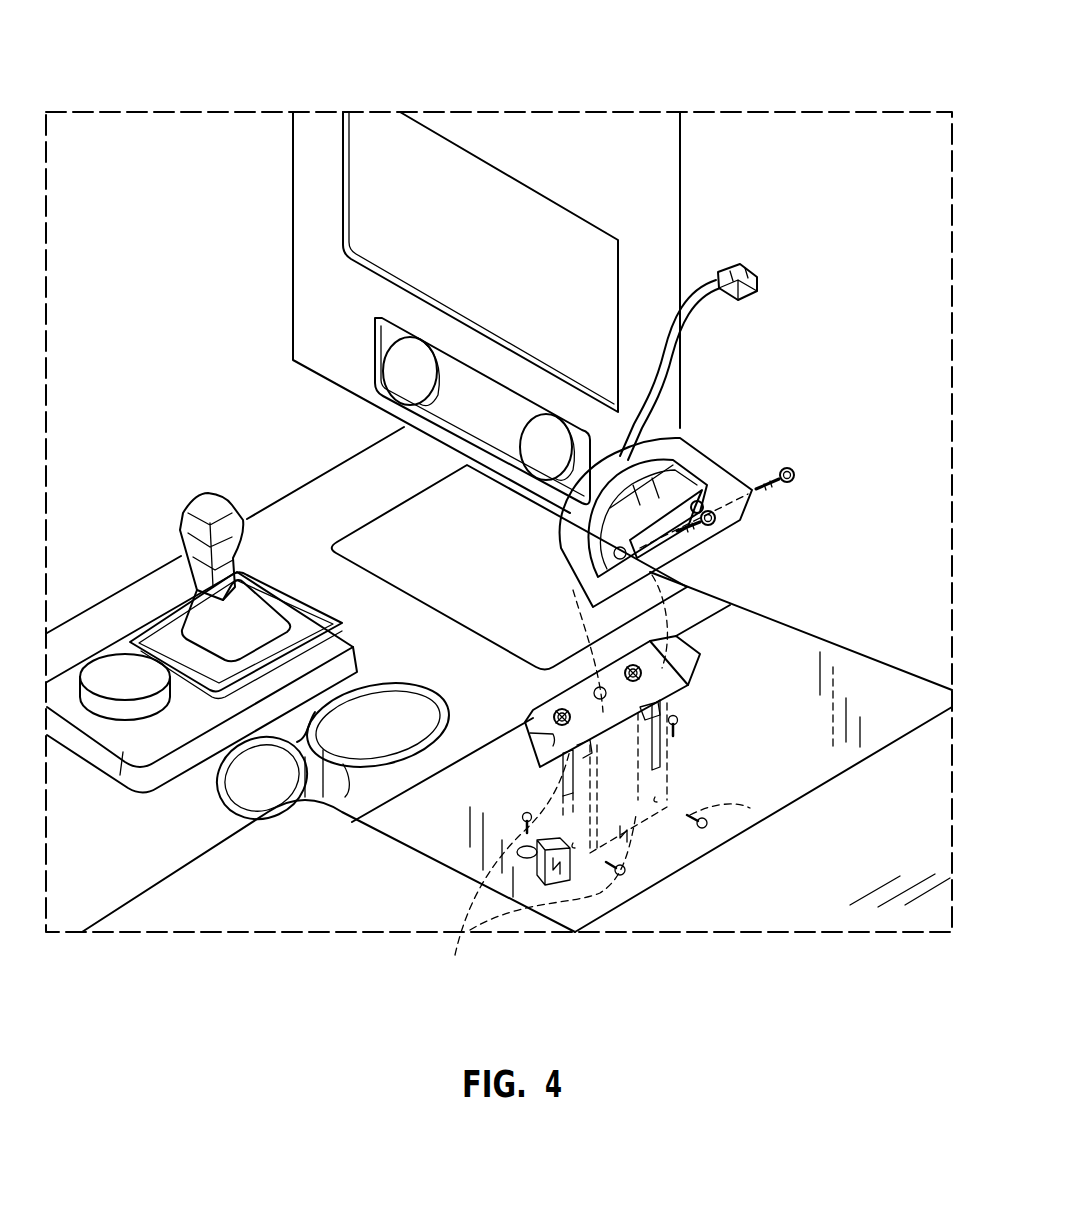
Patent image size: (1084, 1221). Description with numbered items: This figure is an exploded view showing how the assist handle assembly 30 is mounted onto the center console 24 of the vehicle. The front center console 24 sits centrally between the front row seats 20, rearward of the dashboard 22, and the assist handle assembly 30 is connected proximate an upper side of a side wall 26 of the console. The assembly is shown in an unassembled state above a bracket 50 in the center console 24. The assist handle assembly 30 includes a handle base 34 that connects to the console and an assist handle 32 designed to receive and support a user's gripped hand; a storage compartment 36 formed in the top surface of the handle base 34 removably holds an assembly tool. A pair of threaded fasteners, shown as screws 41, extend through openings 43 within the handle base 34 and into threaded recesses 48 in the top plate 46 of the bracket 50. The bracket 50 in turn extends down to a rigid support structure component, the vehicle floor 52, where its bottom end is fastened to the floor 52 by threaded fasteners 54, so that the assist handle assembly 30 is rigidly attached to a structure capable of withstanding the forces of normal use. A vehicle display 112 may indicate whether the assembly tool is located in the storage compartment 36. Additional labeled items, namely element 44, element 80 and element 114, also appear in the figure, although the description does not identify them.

The seats 20 is at (243, 907).
The dashboard 22 is at (585, 160).
The center console 24 is at (392, 637).
The side wall 26 is at (833, 695).
The assist handle assembly 30 is at (695, 479).
The assist handle 32 is at (540, 500).
The handle base 34 is at (771, 525).
The storage compartment 36 is at (642, 466).
The screws 41 is at (791, 470).
The openings 43 is at (693, 458).
The mounting bar 44 is at (716, 711).
The top plate 46 is at (527, 732).
The threaded recesses 48 is at (565, 708).
The bracket 50 is at (655, 872).
The vehicle floor 52 is at (810, 887).
The threaded fasteners 54 is at (675, 730).
The cable 80 is at (700, 280).
The vehicle display 112 is at (433, 160).
The connector 114 is at (736, 272).